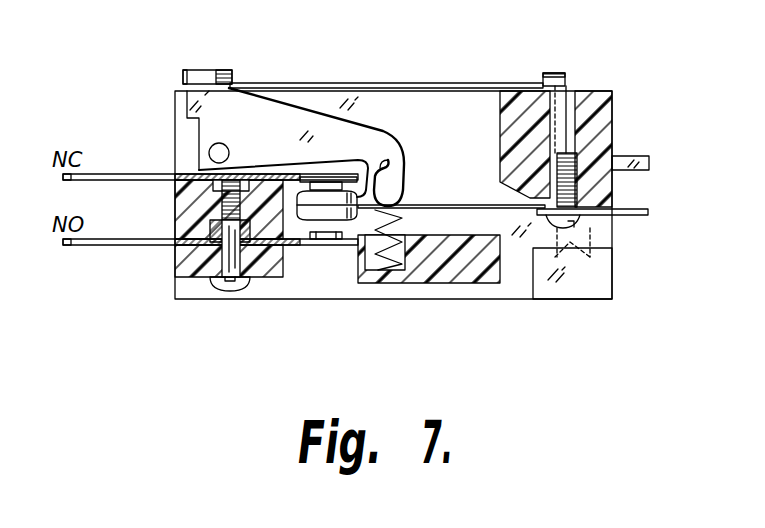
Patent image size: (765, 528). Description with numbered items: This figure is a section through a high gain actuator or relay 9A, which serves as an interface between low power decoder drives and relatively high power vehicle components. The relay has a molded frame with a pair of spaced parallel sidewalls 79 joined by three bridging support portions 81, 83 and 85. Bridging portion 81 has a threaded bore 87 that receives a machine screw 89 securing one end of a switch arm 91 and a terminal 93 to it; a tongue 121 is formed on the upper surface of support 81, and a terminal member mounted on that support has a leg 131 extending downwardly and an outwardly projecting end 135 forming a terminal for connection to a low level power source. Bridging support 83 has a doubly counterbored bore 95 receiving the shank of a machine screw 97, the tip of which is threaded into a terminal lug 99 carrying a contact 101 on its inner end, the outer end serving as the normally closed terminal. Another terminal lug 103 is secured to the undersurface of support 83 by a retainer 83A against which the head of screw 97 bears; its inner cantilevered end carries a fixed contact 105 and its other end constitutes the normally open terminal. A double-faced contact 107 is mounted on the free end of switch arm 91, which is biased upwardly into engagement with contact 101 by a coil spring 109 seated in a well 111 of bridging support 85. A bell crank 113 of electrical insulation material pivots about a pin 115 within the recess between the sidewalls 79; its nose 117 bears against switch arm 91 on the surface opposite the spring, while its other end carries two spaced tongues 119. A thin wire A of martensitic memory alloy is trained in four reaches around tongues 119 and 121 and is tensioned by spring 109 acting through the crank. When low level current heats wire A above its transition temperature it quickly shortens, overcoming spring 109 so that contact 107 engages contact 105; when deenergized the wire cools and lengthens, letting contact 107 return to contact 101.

The high gain actuator or relay 9A is at (344, 306).
The sidewalls 79 is at (428, 108).
The tongues 119 is at (232, 82).
The tongue 121 is at (569, 83).
The threaded bore 87 is at (580, 118).
The bridging support portion 81 is at (600, 136).
The outwardly projecting end 135 is at (643, 156).
The terminal 93 is at (648, 209).
The machine screw 89 is at (582, 227).
The leg 131 is at (590, 247).
The switch arm 91 is at (490, 202).
The bridging support portion 85 is at (462, 280).
The coil spring 109 is at (410, 226).
The well 111 is at (400, 262).
The terminal lug 99 is at (143, 175).
The terminal lug 103 is at (110, 247).
The bridging support portion 83 is at (186, 216).
The retainer 83A is at (183, 278).
The doubly counterbored bore 95 is at (185, 266).
The machine screw 97 is at (246, 293).
The bell crank 113 is at (312, 114).
The thin wire of martensitic memory alloy A is at (364, 84).
The nose 117 is at (404, 195).
The contact 101 is at (320, 168).
The double-faced contact 107 is at (384, 166).
The fixed contact 105 is at (307, 243).
The pin 115 is at (219, 143).